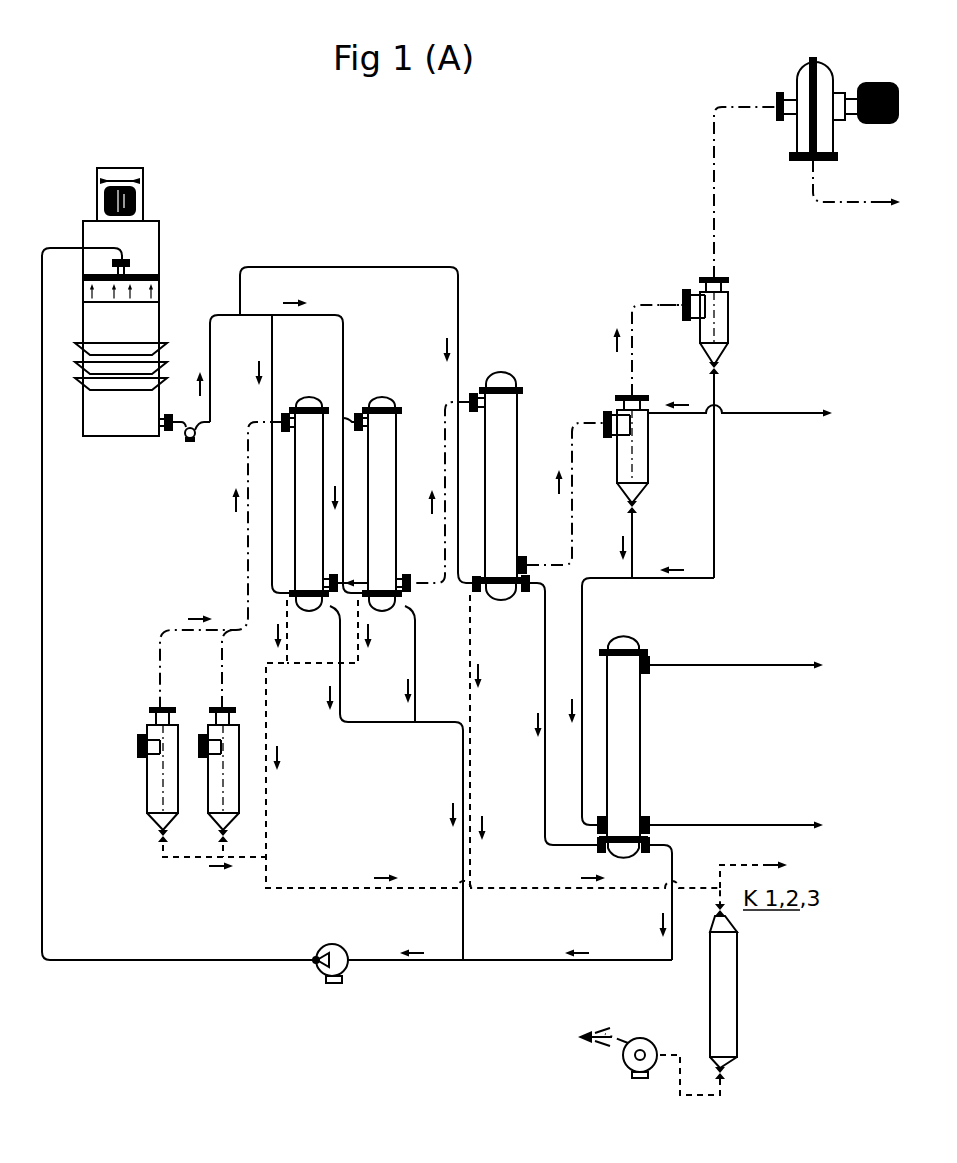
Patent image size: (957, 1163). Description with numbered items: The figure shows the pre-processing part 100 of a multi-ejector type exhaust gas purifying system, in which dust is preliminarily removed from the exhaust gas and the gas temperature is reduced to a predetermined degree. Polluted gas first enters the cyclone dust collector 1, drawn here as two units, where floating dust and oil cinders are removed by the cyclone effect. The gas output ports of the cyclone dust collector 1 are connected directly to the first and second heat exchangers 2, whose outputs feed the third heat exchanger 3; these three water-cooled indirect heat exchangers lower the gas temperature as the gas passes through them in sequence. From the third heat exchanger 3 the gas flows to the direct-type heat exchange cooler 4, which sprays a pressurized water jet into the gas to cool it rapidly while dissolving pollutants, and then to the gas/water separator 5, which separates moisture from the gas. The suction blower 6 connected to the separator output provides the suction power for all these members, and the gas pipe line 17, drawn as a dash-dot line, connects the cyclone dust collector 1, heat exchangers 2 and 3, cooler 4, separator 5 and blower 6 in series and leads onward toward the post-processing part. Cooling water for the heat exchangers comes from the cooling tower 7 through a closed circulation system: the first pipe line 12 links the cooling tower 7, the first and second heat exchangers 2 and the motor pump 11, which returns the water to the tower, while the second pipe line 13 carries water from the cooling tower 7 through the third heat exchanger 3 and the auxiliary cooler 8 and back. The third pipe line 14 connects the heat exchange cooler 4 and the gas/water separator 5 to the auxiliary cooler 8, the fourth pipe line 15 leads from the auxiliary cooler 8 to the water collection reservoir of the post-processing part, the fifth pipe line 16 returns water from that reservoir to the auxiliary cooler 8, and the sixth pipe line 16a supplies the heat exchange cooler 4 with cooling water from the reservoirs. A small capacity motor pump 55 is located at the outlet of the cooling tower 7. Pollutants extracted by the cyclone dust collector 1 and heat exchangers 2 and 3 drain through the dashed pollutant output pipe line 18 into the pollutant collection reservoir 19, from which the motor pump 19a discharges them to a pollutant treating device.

The pre-processing part 100 is at (252, 163).
The cooling tower 7 is at (160, 248).
The small capacity motor pump 55 is at (190, 440).
The first pipe line 12 is at (321, 313).
The second pipe line 13 is at (285, 268).
The first and second heat exchangers 2 is at (308, 399).
The third heat exchanger 3 is at (497, 380).
The gas pipe line 17 is at (158, 641).
The heat exchange cooler 4 is at (628, 397).
The gas/water separator 5 is at (703, 295).
The suction blower 6 is at (807, 86).
The sixth pipe line 16a is at (765, 418).
The third pipe line 14 is at (580, 613).
The auxiliary cooler 8 is at (641, 772).
The fifth pipe line 16 is at (748, 672).
The fourth pipe line 15 is at (751, 829).
The pollutant output pipe line 18 is at (268, 831).
The cyclone dust collector 1 is at (215, 789).
The motor pump 11 is at (327, 985).
The pollutant collection reservoir 19 is at (733, 1047).
The motor pump 19a is at (641, 1079).